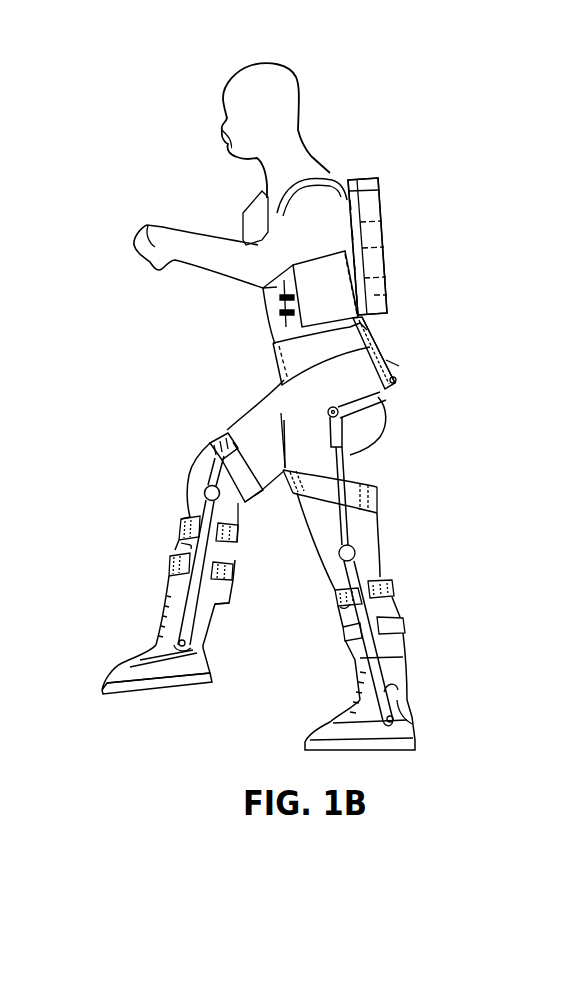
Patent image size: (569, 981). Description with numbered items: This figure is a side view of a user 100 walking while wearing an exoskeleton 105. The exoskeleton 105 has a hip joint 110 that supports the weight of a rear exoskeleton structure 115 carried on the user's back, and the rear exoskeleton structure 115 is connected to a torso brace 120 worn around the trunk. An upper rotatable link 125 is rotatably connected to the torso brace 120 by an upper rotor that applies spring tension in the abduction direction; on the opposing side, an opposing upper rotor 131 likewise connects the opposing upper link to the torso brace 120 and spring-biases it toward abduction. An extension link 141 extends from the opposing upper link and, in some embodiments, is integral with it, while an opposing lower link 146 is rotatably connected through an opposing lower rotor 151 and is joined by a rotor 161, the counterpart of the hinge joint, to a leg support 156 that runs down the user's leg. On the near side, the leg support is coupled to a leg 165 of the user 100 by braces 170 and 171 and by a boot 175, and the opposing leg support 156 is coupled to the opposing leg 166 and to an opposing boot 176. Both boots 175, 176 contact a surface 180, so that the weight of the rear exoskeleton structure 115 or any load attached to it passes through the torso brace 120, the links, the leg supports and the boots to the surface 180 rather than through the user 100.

The user 100 is at (304, 93).
The exoskeleton 105 is at (383, 177).
The hip joint 110 is at (374, 341).
The rear exoskeleton structure 115 is at (383, 205).
The torso brace 120 is at (275, 334).
The upper rotatable link 125 is at (280, 355).
The opposing upper rotor 131 is at (378, 352).
The extension link 141 is at (393, 368).
The opposing lower link 146 is at (390, 388).
The opposing lower rotor 151 is at (398, 376).
The leg support 156 is at (353, 458).
The rotor 161 is at (360, 418).
The leg 165 is at (255, 417).
The opposing leg 166 is at (363, 532).
The brace 170 is at (214, 443).
The brace 171 is at (176, 568).
The boot 175 is at (120, 675).
The opposing boot 176 is at (330, 732).
The surface 180 is at (450, 757).